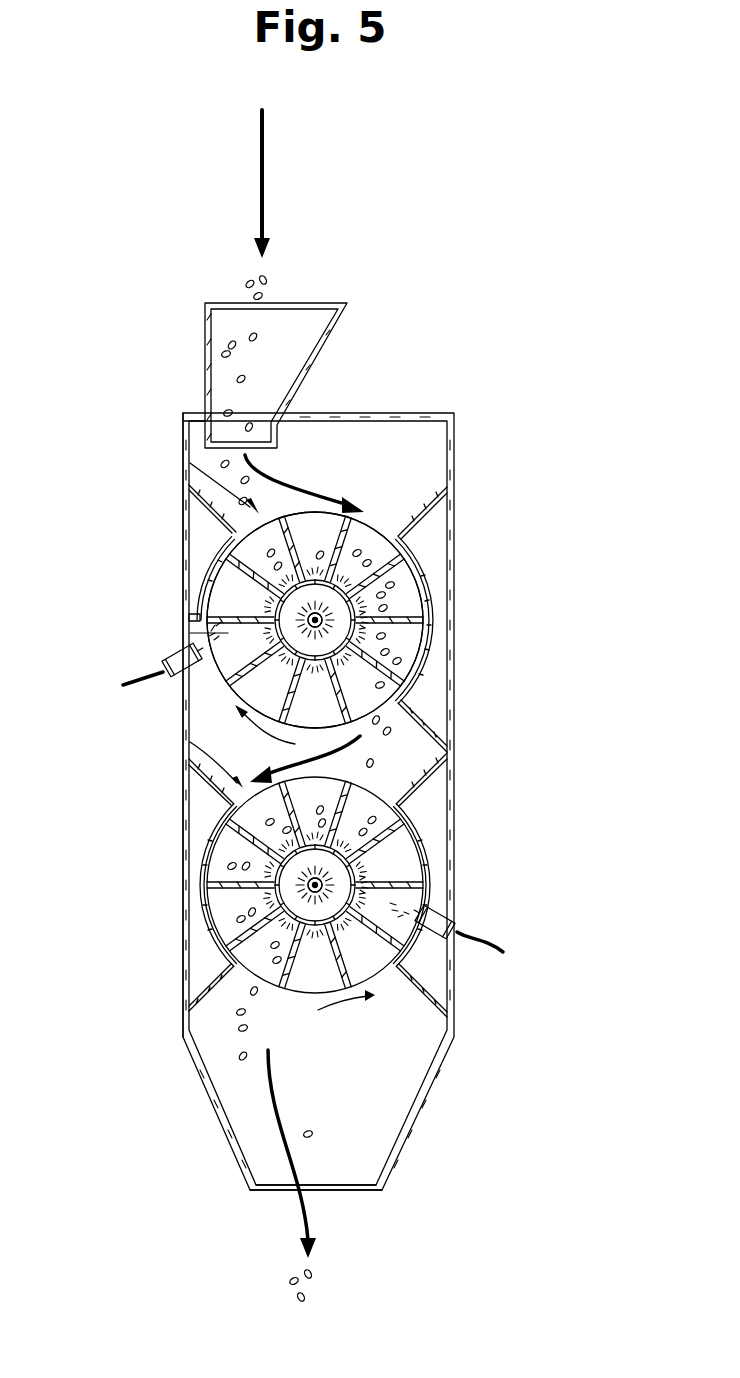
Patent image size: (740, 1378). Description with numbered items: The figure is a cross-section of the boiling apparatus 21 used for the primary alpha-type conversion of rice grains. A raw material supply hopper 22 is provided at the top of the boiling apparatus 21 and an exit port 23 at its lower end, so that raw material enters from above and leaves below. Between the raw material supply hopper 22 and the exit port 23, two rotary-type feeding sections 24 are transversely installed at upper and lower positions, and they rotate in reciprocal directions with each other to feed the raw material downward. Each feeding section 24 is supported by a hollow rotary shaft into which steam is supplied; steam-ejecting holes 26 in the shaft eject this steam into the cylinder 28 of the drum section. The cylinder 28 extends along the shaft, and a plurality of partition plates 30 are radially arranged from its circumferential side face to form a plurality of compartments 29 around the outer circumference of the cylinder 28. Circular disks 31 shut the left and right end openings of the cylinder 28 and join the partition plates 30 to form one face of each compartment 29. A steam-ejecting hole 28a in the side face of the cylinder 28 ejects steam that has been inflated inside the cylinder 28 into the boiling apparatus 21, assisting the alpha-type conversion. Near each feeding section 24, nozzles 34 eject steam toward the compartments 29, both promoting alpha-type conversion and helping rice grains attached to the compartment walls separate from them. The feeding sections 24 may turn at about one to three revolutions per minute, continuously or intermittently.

The boiling apparatus 21 is at (592, 384).
The raw material supply hopper 22 is at (313, 312).
The exit port 23 is at (368, 1190).
The rotary-type feeding section 24 is at (188, 463).
The steam-ejecting hole 26 is at (423, 655).
The cylinder 28 is at (213, 643).
The steam-ejecting hole 28a is at (278, 606).
The compartment 29 is at (377, 542).
The partition plate 30 is at (350, 695).
The circular disk 31 is at (250, 688).
The nozzle 34 is at (160, 655).